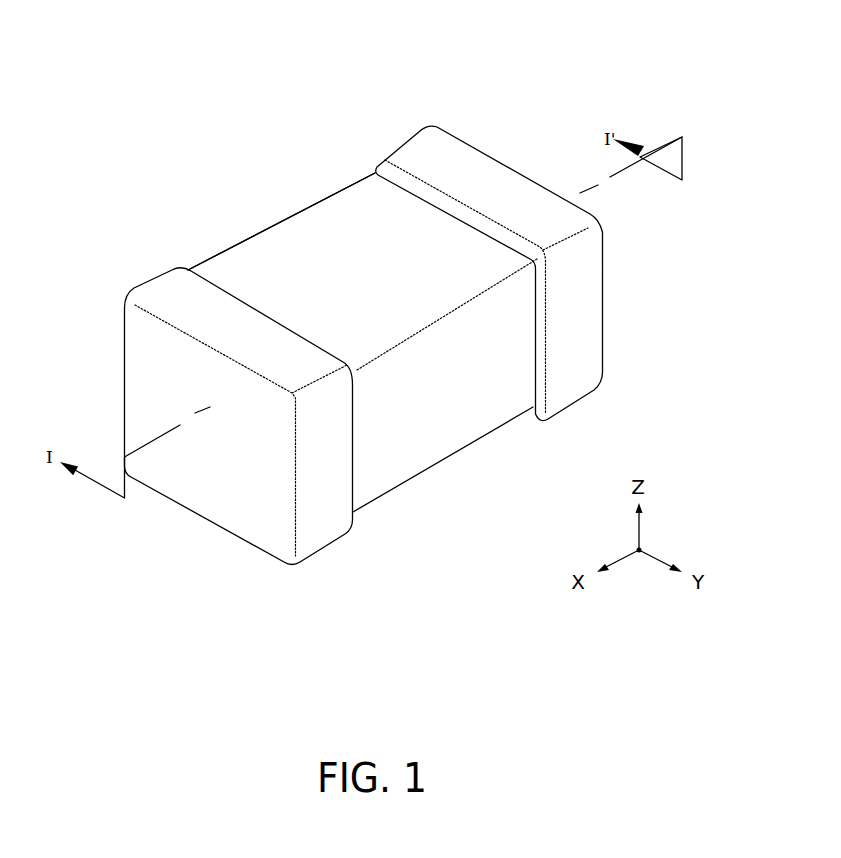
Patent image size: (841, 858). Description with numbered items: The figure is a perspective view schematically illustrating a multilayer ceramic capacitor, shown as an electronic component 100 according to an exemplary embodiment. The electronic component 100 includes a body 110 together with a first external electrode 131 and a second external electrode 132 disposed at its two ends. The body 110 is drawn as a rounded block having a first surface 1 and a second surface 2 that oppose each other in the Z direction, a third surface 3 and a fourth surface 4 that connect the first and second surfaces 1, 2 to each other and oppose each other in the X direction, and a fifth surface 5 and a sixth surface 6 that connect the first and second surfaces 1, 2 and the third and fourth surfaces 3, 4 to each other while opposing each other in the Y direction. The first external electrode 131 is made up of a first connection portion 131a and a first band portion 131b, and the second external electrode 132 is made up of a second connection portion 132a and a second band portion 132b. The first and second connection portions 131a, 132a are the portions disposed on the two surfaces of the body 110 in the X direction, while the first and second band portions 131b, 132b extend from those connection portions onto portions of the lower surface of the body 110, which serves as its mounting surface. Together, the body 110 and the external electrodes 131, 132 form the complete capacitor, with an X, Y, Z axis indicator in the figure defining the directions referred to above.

The electronic component 100 is at (351, 288).
The body 110 is at (362, 338).
The first surface 1 is at (390, 456).
The second surface 2 is at (348, 202).
The third surface 3 is at (185, 488).
The fourth surface 4 is at (582, 308).
The fifth surface 5 is at (473, 426).
The sixth surface 6 is at (275, 262).
The first external electrode 131 is at (195, 377).
The first connection portion 131a is at (140, 373).
The first band portion 131b is at (162, 293).
The second external electrode 132 is at (506, 216).
The second connection portion 132a is at (477, 142).
The second band portion 132b is at (409, 150).